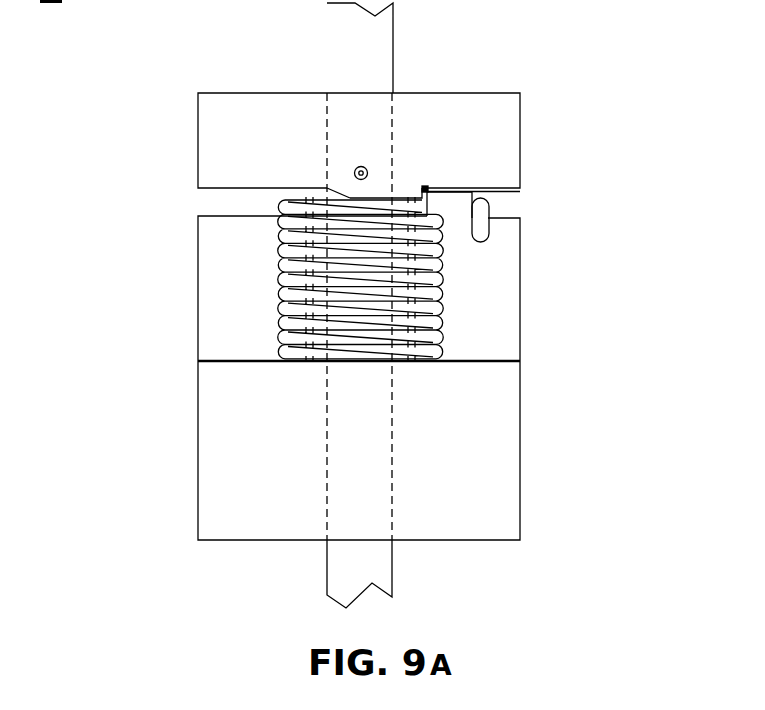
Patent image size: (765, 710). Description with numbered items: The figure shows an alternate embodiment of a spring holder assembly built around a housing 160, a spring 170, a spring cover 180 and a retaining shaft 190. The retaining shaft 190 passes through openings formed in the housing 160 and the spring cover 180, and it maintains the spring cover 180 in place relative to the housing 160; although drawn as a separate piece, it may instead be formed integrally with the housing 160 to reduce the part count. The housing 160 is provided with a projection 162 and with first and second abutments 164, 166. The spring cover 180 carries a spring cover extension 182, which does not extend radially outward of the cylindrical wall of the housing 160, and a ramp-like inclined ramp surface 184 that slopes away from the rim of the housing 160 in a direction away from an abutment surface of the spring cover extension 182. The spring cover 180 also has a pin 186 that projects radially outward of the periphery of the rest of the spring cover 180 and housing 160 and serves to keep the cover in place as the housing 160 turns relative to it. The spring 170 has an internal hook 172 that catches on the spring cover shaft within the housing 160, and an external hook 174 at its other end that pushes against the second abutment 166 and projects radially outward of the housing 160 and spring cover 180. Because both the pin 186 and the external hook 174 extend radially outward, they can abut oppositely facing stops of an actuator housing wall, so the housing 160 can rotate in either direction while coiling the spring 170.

The housing 160 is at (503, 310).
The projection 162 is at (448, 203).
The first abutment 164 is at (422, 192).
The second abutment 166 is at (473, 195).
The spring 170 is at (290, 272).
The internal hook 172 is at (350, 353).
The external hook 174 is at (488, 229).
The spring cover 180 is at (223, 133).
The spring cover extension 182 is at (405, 193).
The inclined ramp surface 184 is at (350, 198).
The pin 186 is at (364, 166).
The retaining shaft 190 is at (380, 42).